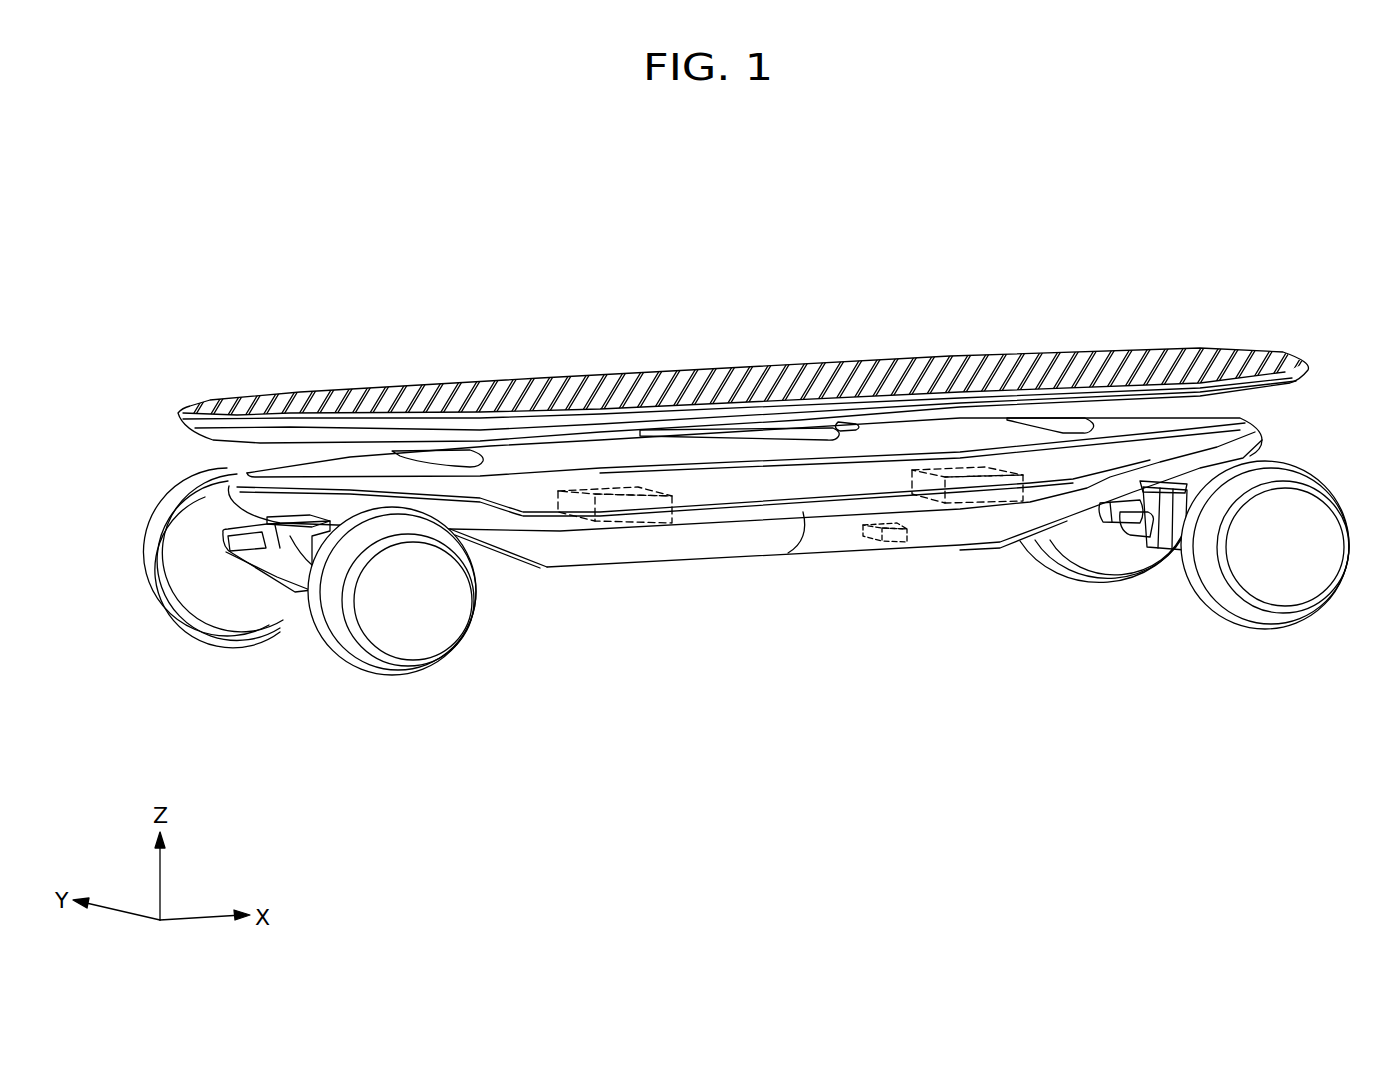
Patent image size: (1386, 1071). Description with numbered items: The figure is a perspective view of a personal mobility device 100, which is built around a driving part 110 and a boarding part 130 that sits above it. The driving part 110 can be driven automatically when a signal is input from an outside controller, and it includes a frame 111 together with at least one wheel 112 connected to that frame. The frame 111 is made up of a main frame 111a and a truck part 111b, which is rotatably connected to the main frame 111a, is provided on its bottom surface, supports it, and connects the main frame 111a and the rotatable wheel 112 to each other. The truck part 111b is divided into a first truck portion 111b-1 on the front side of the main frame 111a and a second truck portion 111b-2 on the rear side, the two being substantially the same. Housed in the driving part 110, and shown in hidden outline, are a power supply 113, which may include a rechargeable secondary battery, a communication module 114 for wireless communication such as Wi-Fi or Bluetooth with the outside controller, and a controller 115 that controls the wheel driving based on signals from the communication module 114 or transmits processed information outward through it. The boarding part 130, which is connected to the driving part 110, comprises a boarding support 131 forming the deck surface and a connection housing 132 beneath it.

The personal mobility device 100 is at (1034, 266).
The driving part 110 is at (980, 770).
The frame 111 is at (503, 728).
The main frame 111a is at (548, 556).
The truck part 111b is at (281, 546).
The first truck portion 111b-1 is at (276, 553).
The second truck portion 111b-2 is at (1168, 560).
The wheel 112 is at (215, 636).
The power supply 113 is at (983, 505).
The communication module 114 is at (877, 542).
The controller 115 is at (622, 522).
The boarding part 130 is at (947, 291).
The boarding support 131 is at (927, 368).
The connection housing 132 is at (858, 428).